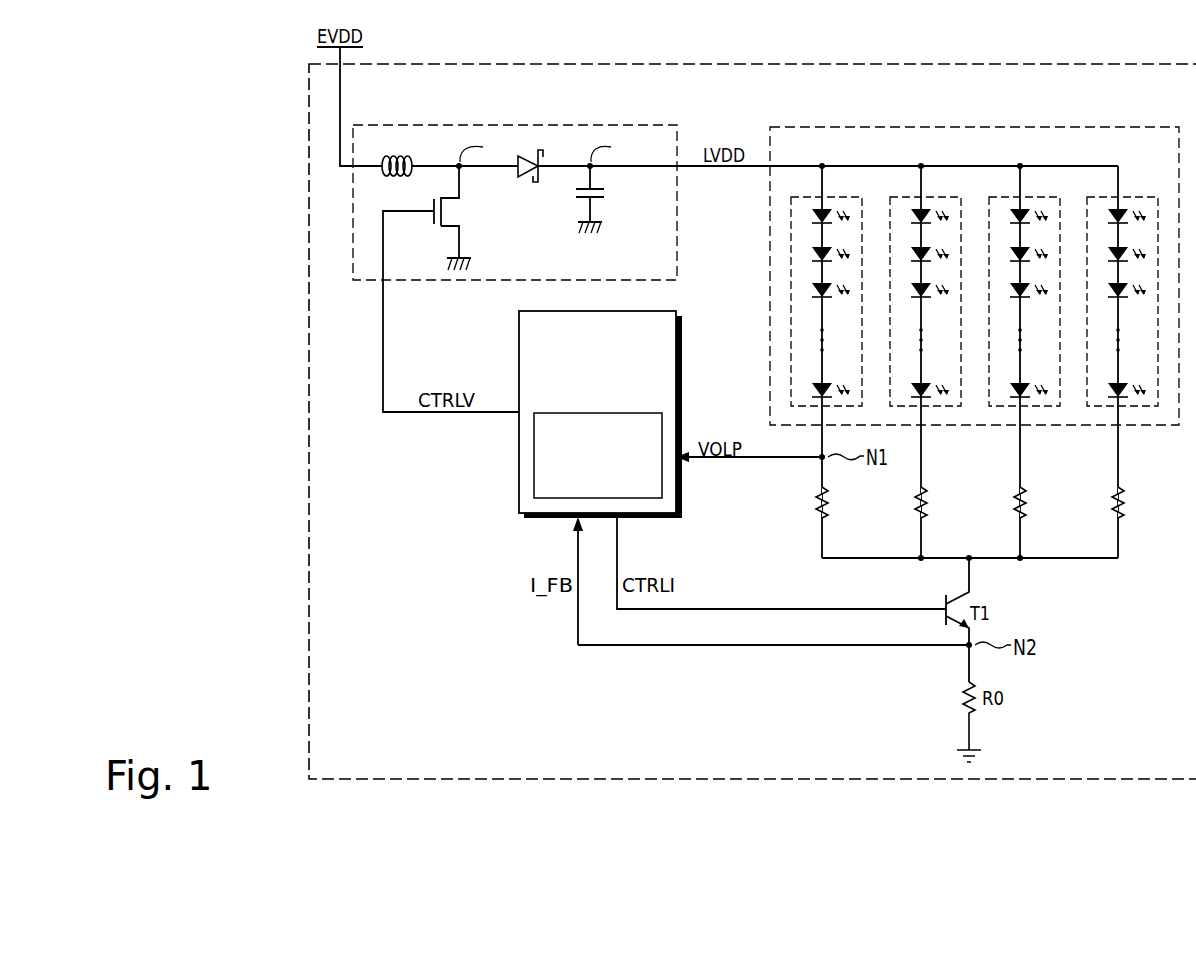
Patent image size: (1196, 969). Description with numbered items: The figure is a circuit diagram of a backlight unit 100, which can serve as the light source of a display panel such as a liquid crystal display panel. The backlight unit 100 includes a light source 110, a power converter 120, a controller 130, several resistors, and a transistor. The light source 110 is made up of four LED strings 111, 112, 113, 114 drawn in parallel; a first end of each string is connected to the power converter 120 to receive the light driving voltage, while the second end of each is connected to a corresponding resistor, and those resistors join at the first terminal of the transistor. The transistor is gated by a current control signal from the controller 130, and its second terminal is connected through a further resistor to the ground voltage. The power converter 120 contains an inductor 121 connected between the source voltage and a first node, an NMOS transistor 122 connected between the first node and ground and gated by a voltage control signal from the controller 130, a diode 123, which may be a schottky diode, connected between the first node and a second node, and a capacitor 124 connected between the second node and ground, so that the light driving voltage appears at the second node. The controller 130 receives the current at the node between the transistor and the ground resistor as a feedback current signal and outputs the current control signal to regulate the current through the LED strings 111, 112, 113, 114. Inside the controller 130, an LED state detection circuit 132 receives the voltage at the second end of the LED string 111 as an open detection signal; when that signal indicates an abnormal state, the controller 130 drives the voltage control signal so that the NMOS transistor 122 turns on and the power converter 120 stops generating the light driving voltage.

The backlight unit 100 is at (309, 458).
The light source 110 is at (1083, 127).
The LED string 111 is at (834, 197).
The LED string 112 is at (933, 197).
The LED string 113 is at (1032, 197).
The LED string 114 is at (1141, 197).
The power converter 120 is at (620, 125).
The inductor 121 is at (392, 157).
The NMOS transistor 122 is at (462, 212).
The diode 123 is at (539, 151).
The capacitor 124 is at (606, 194).
The controller 130 is at (563, 414).
The LED state detection circuit 132 is at (628, 413).